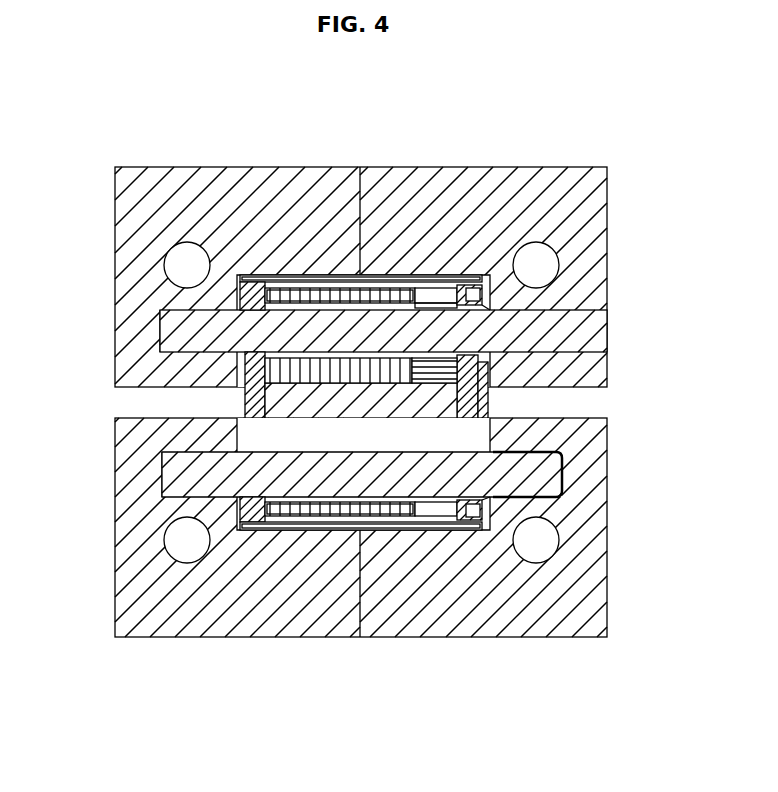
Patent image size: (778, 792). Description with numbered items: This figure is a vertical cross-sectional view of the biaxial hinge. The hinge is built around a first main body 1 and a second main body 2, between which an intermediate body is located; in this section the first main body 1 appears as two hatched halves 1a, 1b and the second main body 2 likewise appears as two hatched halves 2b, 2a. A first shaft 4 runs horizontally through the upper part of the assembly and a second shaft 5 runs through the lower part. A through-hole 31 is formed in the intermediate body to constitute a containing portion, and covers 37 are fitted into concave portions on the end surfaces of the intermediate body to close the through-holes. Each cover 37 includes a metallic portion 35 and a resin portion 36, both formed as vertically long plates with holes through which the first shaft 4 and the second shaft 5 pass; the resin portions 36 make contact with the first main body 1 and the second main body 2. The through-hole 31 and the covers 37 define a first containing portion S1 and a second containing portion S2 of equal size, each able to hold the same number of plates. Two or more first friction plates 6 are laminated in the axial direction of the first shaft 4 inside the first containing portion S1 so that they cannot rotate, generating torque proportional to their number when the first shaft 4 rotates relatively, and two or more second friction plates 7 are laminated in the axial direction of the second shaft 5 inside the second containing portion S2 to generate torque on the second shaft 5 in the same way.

The first main body 1 is at (361, 223).
The first mold half of upper mold 1a is at (302, 185).
The second mold half of upper mold 1b is at (465, 190).
The second main body 2 is at (361, 594).
The first mold half of lower mold 2a is at (428, 615).
The second mold half of lower mold 2b is at (331, 615).
The first shaft 4 is at (547, 333).
The second shaft 5 is at (548, 476).
The first friction plates 6 is at (262, 348).
The second friction plates 7 is at (272, 430).
The through-hole 31 is at (426, 290).
The metallic portion 35 is at (470, 288).
The resin portion 36 is at (479, 292).
The covers 37 is at (530, 198).
The first containing portion S1 is at (450, 300).
The second containing portion S2 is at (455, 420).